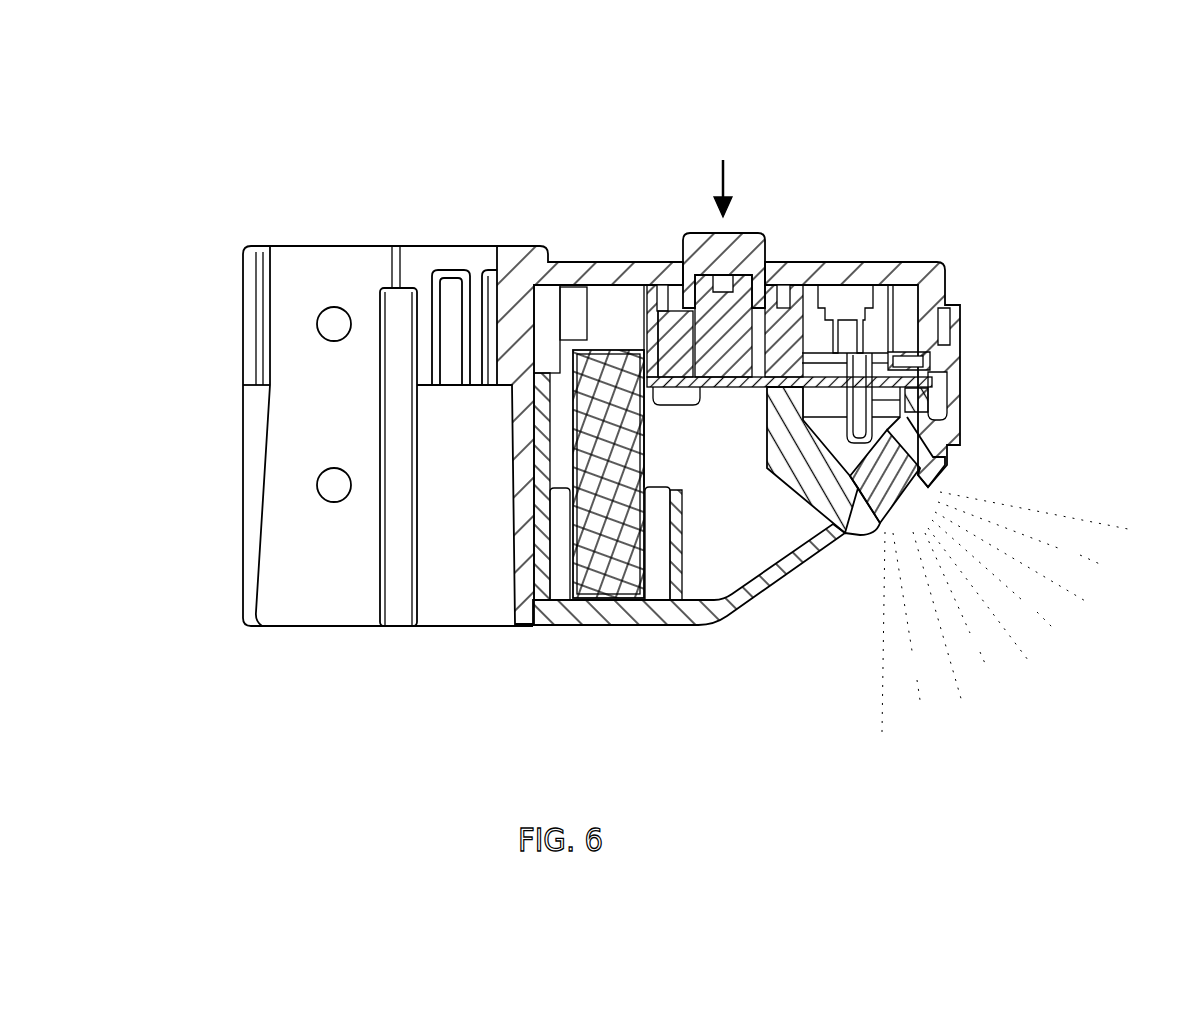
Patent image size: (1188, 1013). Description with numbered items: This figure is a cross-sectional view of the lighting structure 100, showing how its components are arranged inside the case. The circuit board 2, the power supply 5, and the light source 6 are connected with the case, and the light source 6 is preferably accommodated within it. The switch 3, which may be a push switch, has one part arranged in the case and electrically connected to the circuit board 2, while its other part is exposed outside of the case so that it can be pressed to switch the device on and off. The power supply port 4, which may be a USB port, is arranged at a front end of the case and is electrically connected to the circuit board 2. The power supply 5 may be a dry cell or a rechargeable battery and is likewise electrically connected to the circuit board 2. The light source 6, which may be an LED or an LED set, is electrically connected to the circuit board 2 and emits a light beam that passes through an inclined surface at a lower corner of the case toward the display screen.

The lighting structure 100 is at (280, 162).
The circuit board 2 is at (717, 388).
The switch 3 is at (752, 237).
The power supply port 4 is at (937, 356).
The power supply 5 is at (620, 370).
The light source 6 is at (948, 485).